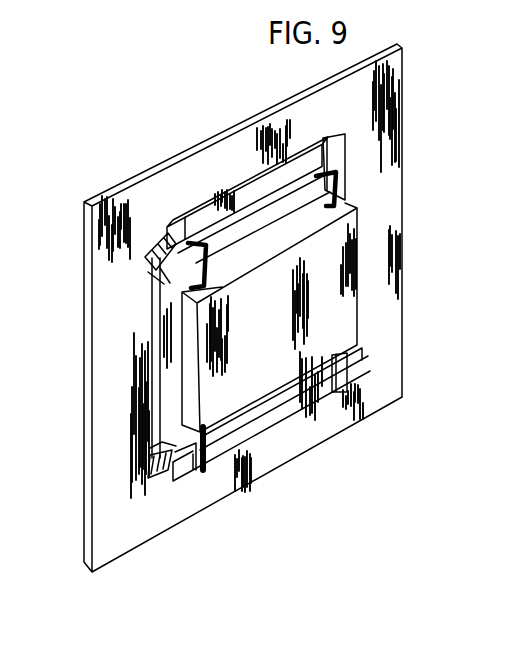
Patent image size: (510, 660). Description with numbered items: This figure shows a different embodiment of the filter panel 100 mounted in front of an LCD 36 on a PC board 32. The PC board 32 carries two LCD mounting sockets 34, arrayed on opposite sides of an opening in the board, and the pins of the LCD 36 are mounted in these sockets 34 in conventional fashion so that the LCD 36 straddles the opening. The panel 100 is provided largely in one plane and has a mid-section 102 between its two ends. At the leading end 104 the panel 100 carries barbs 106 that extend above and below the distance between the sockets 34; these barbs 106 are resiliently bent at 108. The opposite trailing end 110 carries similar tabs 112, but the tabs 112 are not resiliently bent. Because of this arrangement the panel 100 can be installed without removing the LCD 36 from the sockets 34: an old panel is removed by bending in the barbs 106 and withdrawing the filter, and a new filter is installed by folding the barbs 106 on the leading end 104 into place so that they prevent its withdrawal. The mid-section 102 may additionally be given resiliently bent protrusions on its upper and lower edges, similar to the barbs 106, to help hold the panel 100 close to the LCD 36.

The PC board 32 is at (325, 420).
The LCD mounting sockets 34 is at (250, 190).
The LCD 36 is at (289, 329).
The panel 100 is at (247, 233).
The mid-section 102 is at (255, 400).
The leading end 104 is at (160, 380).
The barbs 106 is at (150, 250).
The resilient bend 108 is at (160, 285).
The trailing end 110 is at (340, 186).
The tabs 112 is at (345, 157).